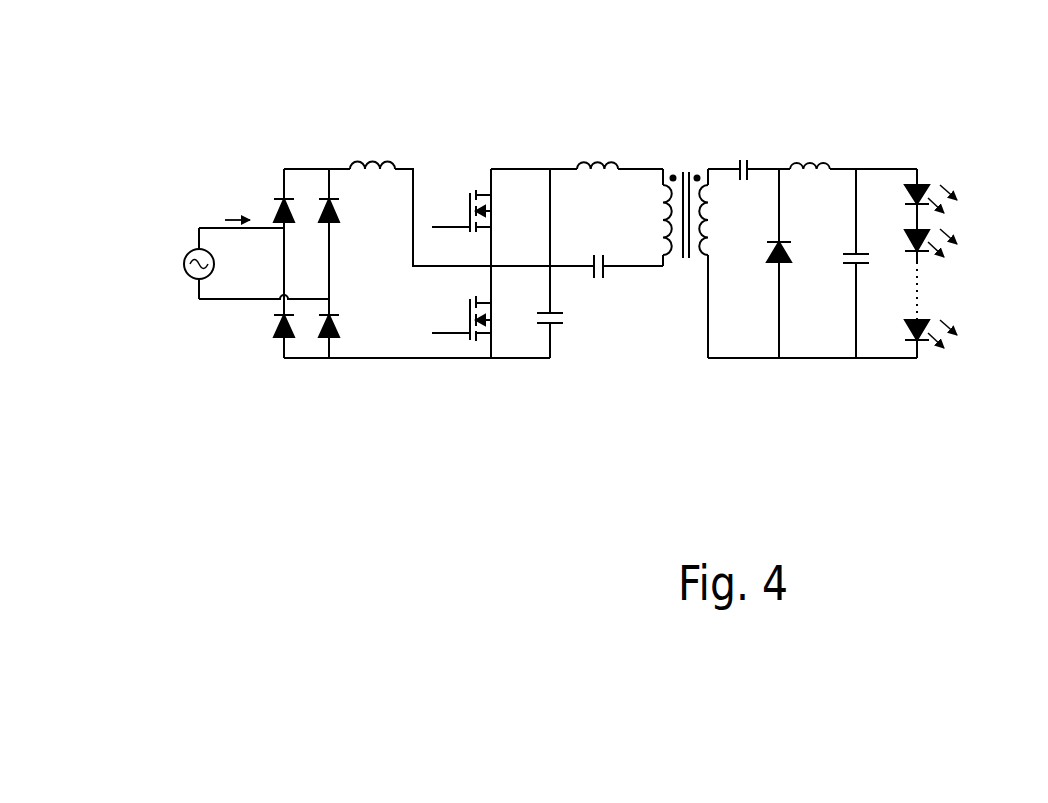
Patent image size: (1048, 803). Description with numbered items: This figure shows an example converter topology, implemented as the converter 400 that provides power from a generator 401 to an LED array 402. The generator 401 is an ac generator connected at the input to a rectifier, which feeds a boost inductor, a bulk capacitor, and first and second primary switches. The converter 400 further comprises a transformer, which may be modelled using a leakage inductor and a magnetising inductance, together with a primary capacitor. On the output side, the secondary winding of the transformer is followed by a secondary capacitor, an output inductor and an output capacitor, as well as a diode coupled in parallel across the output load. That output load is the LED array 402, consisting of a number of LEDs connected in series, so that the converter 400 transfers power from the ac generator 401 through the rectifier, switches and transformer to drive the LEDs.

The converter 400 is at (185, 183).
The generator 401 is at (185, 260).
The LED array 402 is at (968, 227).